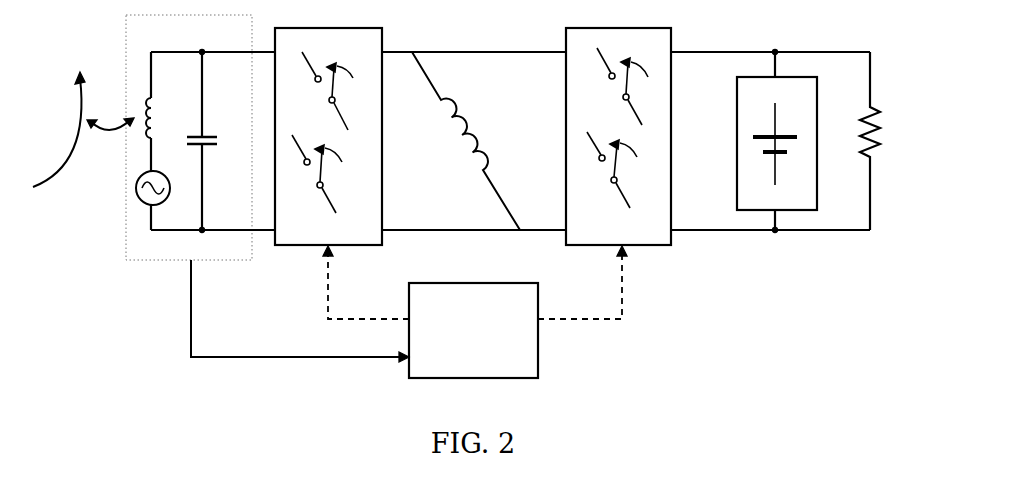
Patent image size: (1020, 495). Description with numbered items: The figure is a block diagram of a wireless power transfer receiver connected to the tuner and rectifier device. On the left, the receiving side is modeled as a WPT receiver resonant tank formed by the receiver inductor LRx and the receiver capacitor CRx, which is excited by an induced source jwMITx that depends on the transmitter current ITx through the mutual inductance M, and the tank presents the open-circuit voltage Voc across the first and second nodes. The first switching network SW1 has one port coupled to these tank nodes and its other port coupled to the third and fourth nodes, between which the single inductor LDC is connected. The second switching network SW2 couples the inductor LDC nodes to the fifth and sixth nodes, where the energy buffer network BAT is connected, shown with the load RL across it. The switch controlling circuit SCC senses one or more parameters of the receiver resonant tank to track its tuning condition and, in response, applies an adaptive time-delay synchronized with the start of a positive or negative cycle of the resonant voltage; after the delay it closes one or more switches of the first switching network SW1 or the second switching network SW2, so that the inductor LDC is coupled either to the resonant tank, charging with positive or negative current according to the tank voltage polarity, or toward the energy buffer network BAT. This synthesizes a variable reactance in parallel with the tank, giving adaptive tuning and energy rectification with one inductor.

The transmitter current ITx is at (59, 129).
The mutual inductance M is at (110, 134).
The WPT receiver resonant tank inductor LRx is at (132, 110).
The induced voltage source jwMITx is at (113, 194).
The WPT receiver resonant tank capacitor CRx is at (209, 141).
The open-circuit voltage Voc is at (175, 30).
The first switching network SW1 is at (328, 136).
The inductor LDC is at (466, 141).
The second switching network SW2 is at (618, 136).
The energy buffer network BAT is at (777, 141).
The load resistor RL is at (884, 141).
The switch controlling circuit SCC is at (409, 312).